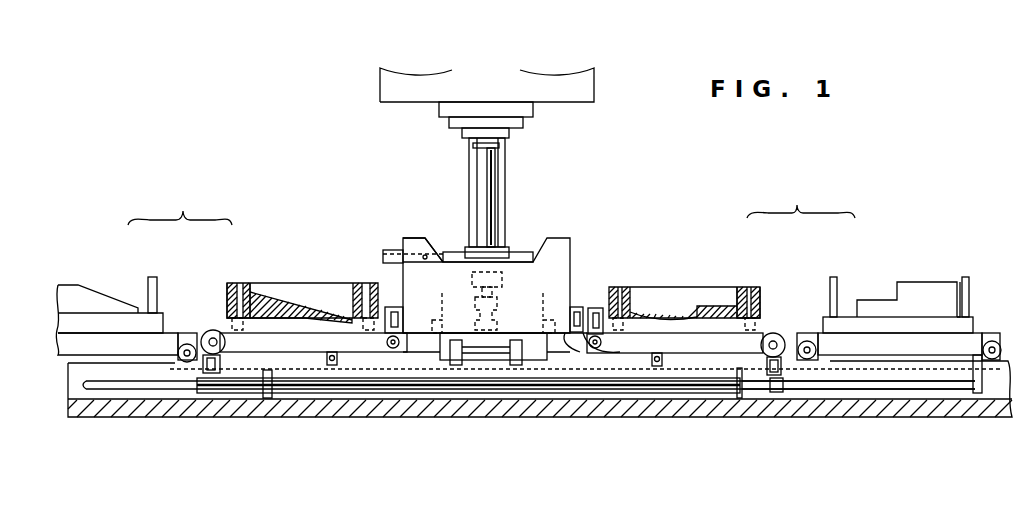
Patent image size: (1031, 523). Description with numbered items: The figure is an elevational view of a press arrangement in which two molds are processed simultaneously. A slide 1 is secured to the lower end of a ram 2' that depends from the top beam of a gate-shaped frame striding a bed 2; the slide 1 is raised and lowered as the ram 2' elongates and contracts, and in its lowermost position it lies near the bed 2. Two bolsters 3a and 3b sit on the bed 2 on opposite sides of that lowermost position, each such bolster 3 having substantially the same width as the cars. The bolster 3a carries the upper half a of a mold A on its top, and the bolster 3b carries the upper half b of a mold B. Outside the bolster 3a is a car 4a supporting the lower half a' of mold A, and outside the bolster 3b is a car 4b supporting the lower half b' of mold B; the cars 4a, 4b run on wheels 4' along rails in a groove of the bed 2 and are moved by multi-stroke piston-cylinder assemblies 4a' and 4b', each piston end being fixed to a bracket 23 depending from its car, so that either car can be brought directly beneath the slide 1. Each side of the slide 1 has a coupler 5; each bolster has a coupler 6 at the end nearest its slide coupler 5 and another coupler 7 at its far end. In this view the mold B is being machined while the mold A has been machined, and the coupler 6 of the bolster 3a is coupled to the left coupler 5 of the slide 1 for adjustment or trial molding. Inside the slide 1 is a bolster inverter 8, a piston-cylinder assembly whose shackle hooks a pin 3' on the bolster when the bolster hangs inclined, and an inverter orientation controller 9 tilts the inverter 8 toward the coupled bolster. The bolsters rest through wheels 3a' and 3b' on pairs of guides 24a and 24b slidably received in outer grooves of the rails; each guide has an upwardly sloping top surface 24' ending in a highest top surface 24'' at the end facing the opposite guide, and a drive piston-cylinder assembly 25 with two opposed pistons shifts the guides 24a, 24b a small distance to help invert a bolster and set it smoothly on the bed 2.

The slide 1 is at (556, 240).
The bed 2 is at (540, 414).
The ram 2' is at (487, 163).
The left workpiece holder 3 is at (302, 375).
The pin 3' is at (506, 410).
The bolster 3a is at (334, 400).
The wheels 3a' is at (204, 314).
The bolster 3b is at (675, 295).
The wheels 3b' is at (713, 297).
The wheels 4' is at (591, 319).
The car 4a is at (117, 376).
The piston-cylinder assembly 4a' is at (469, 418).
The car 4b is at (900, 297).
The piston-cylinder assembly 4b' is at (858, 425).
The coupler 5 is at (576, 306).
The coupler 6 is at (597, 307).
The coupler 7 is at (213, 372).
The bolster inverter 8 is at (490, 187).
The inverter orientation controller 9 is at (440, 252).
The bracket 23 is at (980, 372).
The upwardly sloping top surface 24' is at (561, 400).
The highest top surface 24'' is at (496, 300).
The guides 24a is at (376, 355).
The guides 24b is at (606, 355).
The drive piston-cylinder assembly 25 is at (483, 360).
The mold A is at (180, 207).
The mold B is at (801, 199).
The upper half of mold A a is at (233, 270).
The lower half of mold A a' is at (110, 277).
The upper half of mold B b is at (749, 269).
The lower half of mold B b' is at (899, 268).